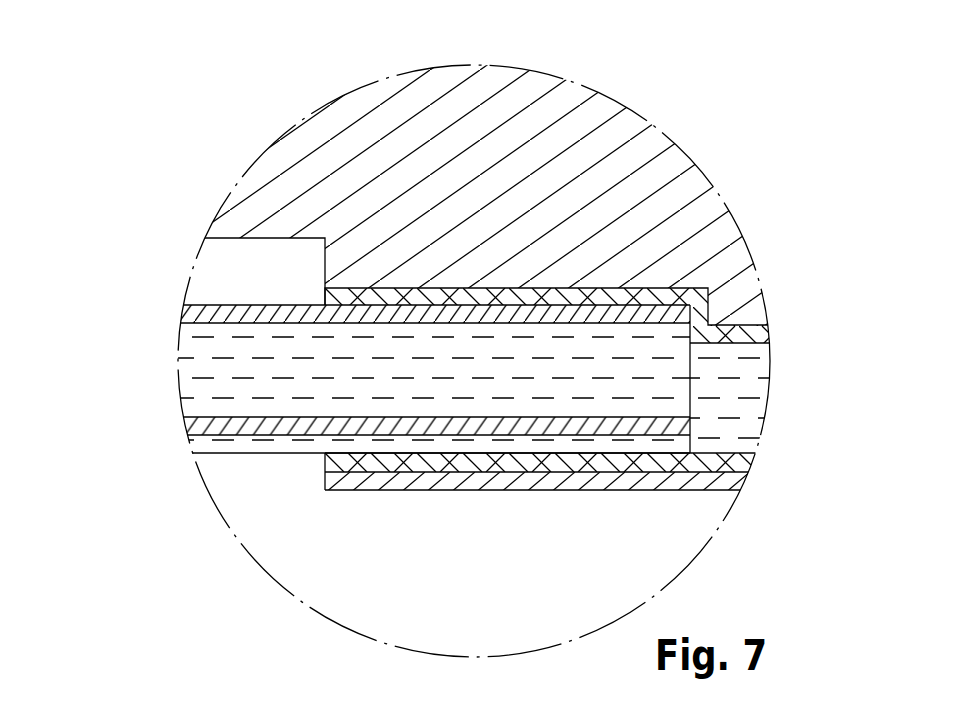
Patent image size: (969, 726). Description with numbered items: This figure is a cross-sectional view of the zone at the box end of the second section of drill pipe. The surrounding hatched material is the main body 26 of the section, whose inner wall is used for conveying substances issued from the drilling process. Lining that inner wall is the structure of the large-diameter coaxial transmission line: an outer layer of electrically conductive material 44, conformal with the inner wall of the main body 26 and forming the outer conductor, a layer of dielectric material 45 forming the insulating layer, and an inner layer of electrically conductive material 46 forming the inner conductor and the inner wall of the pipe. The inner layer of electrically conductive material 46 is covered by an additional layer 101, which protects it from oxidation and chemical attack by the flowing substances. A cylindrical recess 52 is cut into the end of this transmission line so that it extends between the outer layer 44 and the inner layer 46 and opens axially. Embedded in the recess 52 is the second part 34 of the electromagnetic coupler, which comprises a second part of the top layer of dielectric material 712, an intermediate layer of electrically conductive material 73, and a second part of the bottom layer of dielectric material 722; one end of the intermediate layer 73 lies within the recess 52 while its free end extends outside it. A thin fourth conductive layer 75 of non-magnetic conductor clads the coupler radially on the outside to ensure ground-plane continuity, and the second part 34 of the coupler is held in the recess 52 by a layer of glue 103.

The main body 26 is at (358, 138).
The second part of the electromagnetic coupler 34 is at (83, 265).
The fourth conductive layer 75 is at (180, 314).
The second part of the top layer of dielectric material 712 is at (202, 366).
The intermediate layer of electrically conductive material 73 is at (182, 426).
The second part of the bottom layer of dielectric material 722 is at (192, 452).
The outer layer of electrically conductive material 44 is at (768, 340).
The layer of dielectric material 45 is at (740, 387).
The inner layer of electrically conductive material 46 is at (737, 462).
The additional layer 101 is at (732, 478).
The layer of glue 103 is at (413, 457).
The cylindrical recess 52 is at (528, 455).